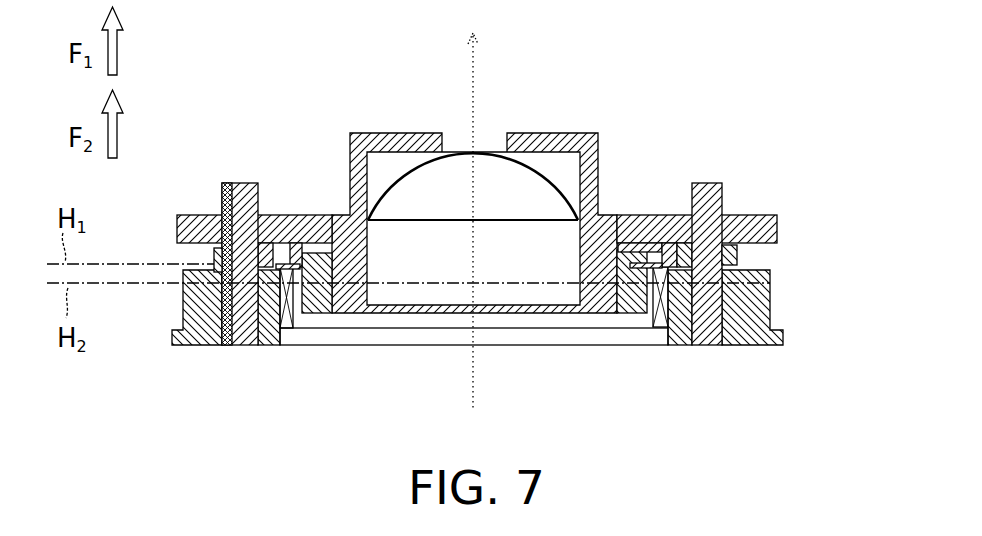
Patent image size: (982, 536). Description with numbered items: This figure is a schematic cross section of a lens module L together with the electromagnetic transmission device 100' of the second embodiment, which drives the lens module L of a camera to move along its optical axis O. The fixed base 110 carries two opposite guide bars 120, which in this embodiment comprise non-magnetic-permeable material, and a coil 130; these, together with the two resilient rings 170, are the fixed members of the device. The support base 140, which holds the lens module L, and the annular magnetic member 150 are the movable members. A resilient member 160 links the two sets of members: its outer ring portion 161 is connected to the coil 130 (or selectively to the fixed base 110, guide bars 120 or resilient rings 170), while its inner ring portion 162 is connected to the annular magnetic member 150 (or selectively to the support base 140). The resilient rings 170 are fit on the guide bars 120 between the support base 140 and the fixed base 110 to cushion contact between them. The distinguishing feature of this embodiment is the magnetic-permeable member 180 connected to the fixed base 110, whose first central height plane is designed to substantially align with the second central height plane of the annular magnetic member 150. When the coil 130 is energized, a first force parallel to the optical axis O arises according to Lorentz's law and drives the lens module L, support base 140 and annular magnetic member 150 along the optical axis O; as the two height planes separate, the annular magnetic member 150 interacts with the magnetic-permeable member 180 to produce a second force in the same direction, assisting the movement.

The electromagnetic transmission device 100' is at (457, 163).
The fixed base 110 is at (750, 303).
The guide bars 120 is at (240, 328).
The coil 130 is at (654, 328).
The support base 140 is at (295, 198).
The annular magnetic member 150 is at (310, 318).
The resilient member 160 is at (278, 250).
The outer ring portion 161 is at (668, 262).
The inner ring portion 162 is at (642, 243).
The resilient rings 170 is at (214, 256).
The magnetic-permeable member 180 is at (226, 186).
The lens module L is at (568, 134).
The optical axis O is at (478, 76).